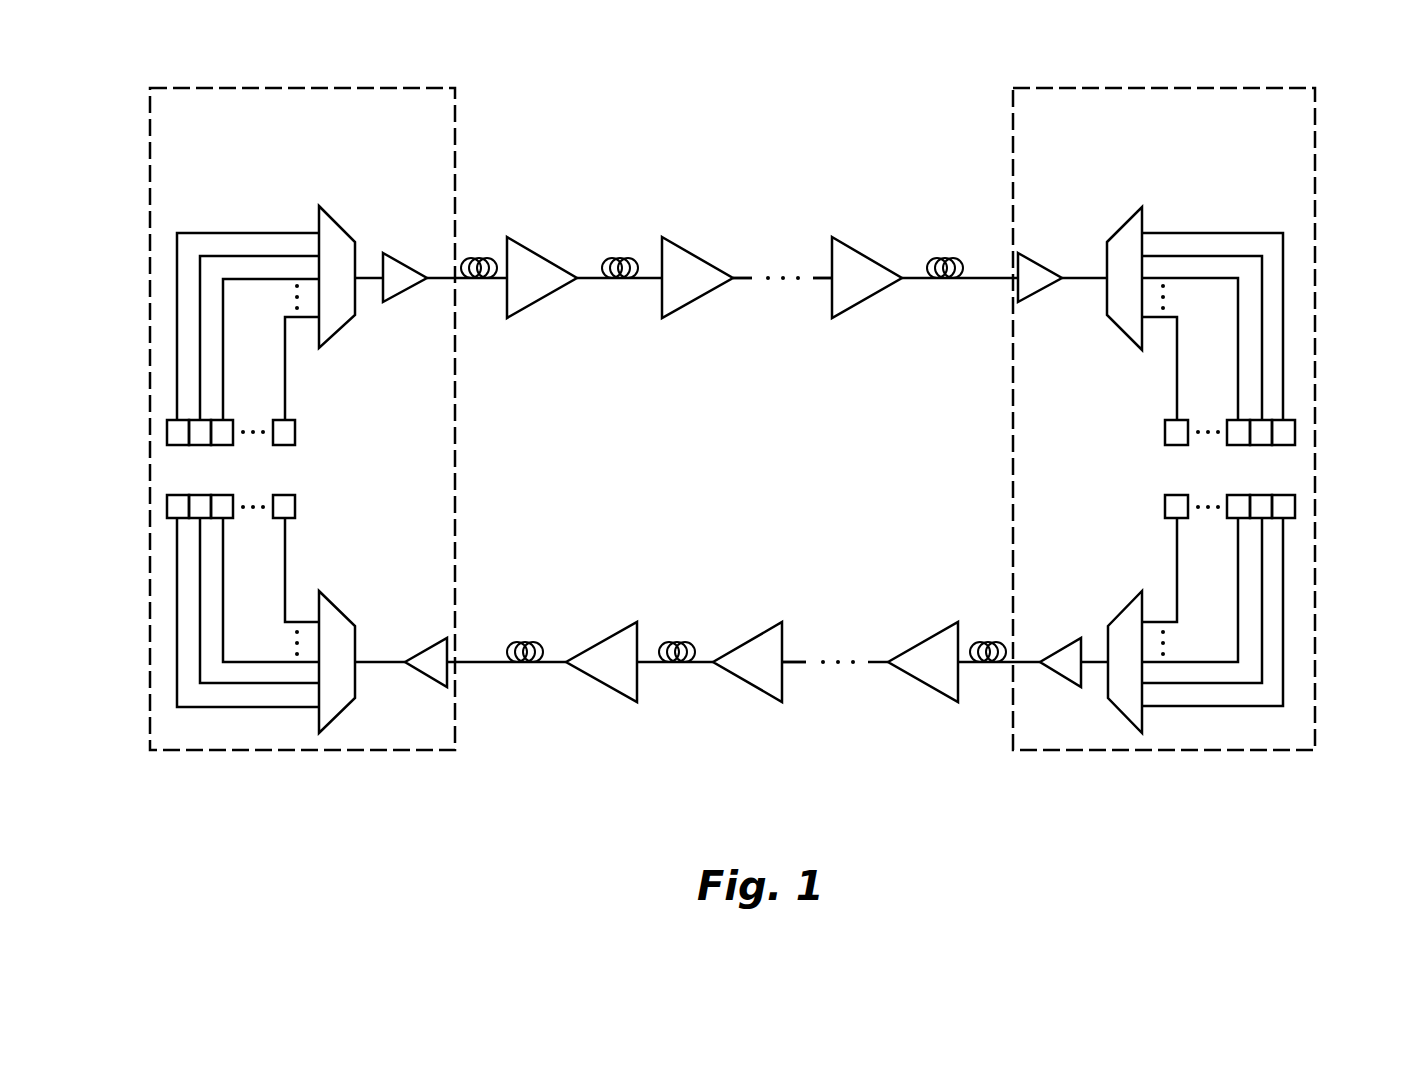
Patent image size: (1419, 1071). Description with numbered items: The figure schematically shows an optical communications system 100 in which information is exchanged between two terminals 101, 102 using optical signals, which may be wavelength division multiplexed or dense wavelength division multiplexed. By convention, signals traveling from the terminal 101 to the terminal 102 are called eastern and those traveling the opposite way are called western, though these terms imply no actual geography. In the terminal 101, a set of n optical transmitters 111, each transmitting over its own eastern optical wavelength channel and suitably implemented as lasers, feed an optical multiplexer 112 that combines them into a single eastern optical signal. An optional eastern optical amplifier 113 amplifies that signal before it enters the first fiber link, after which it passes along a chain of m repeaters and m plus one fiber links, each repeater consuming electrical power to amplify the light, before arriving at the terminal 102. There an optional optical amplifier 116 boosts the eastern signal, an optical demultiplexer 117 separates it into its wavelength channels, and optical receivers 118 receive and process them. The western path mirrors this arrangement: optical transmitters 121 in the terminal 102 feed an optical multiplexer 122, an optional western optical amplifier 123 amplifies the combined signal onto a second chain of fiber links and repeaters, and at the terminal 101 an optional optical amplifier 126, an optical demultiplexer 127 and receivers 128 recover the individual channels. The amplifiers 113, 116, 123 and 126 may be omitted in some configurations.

The optical communications system 100 is at (757, 54).
The terminal 101 is at (376, 131).
The terminal 102 is at (1234, 131).
The optical transmitters 111 is at (289, 355).
The optical multiplexer 112 is at (337, 225).
The eastern optical amplifier 113 is at (415, 268).
The optical amplifier 116 is at (1047, 262).
The optical demultiplexer 117 is at (1133, 213).
The optical receivers 118 is at (1184, 355).
The optical transmitters 121 is at (1169, 600).
The optical multiplexer 122 is at (1125, 605).
The western optical amplifier 123 is at (1057, 677).
The optical amplifier 126 is at (421, 677).
The optical demultiplexer 127 is at (337, 605).
The receivers 128 is at (275, 600).